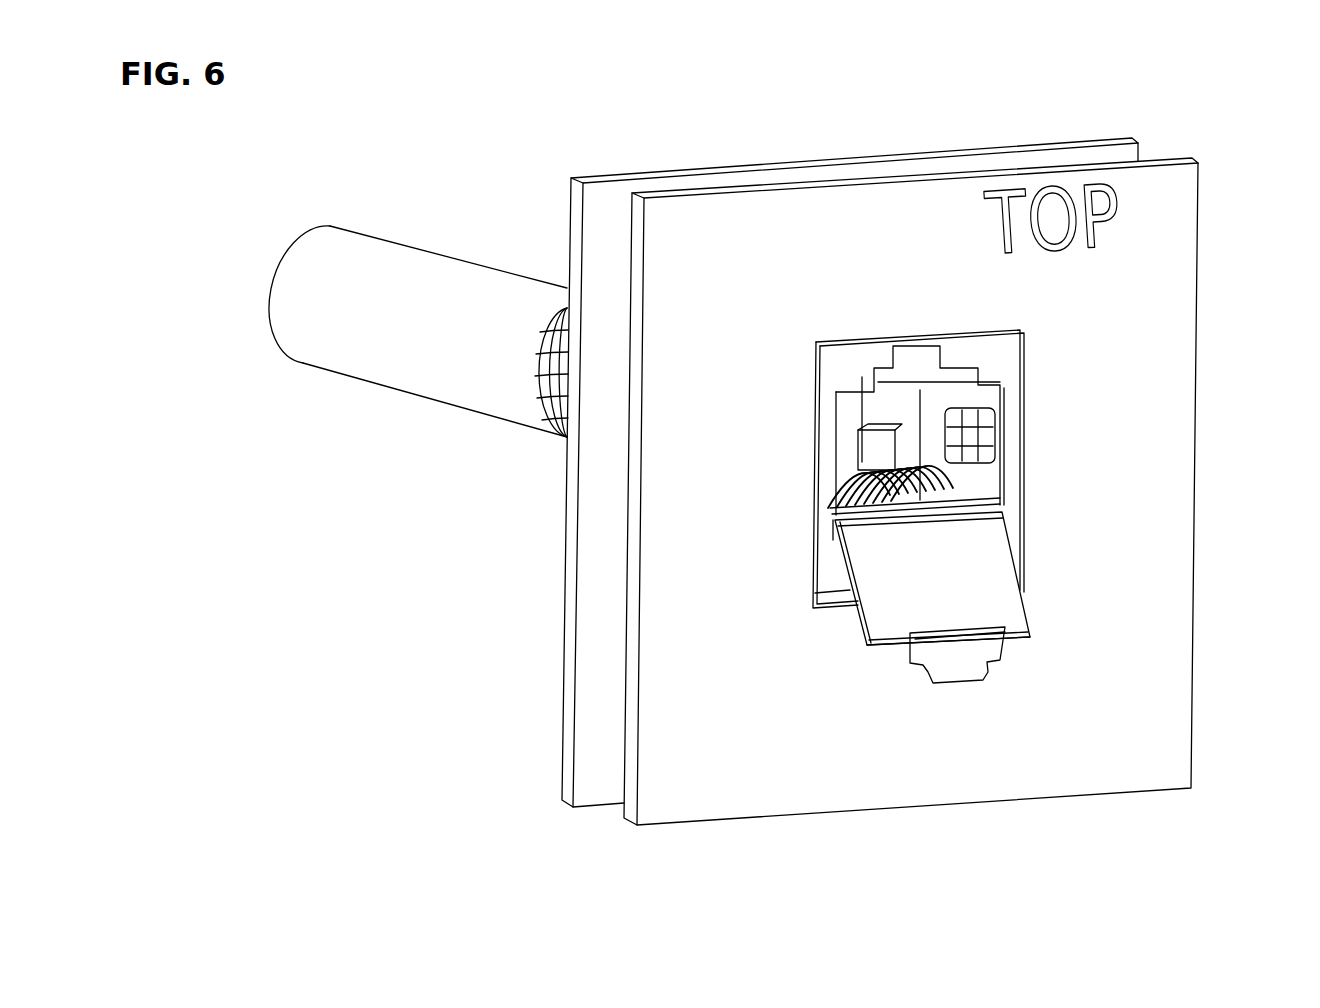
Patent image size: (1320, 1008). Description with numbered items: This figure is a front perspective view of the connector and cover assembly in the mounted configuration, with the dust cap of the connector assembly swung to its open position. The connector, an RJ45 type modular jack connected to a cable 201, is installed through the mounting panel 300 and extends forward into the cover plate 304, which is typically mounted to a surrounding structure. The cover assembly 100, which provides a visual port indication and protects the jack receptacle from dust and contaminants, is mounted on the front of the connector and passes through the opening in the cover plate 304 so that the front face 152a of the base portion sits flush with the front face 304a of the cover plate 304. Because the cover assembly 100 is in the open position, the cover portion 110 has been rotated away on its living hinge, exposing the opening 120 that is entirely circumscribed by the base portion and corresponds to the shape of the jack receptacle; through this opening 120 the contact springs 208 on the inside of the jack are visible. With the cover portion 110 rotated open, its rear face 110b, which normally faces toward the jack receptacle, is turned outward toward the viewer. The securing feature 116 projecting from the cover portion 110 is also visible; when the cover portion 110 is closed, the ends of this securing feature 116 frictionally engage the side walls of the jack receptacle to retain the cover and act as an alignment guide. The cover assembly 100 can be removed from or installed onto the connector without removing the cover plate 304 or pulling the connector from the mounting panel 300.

The cover assembly 100 is at (1005, 349).
The cover portion 110 is at (1020, 638).
The rear face 110b is at (1012, 607).
The securing feature 116 is at (913, 635).
The opening 120 is at (975, 472).
The front face 152a is at (1006, 410).
The cable 201 is at (410, 360).
The contact springs 208 is at (838, 484).
The mounting panel 300 is at (590, 792).
The cover plate 304 is at (740, 790).
The front face 304a is at (869, 778).